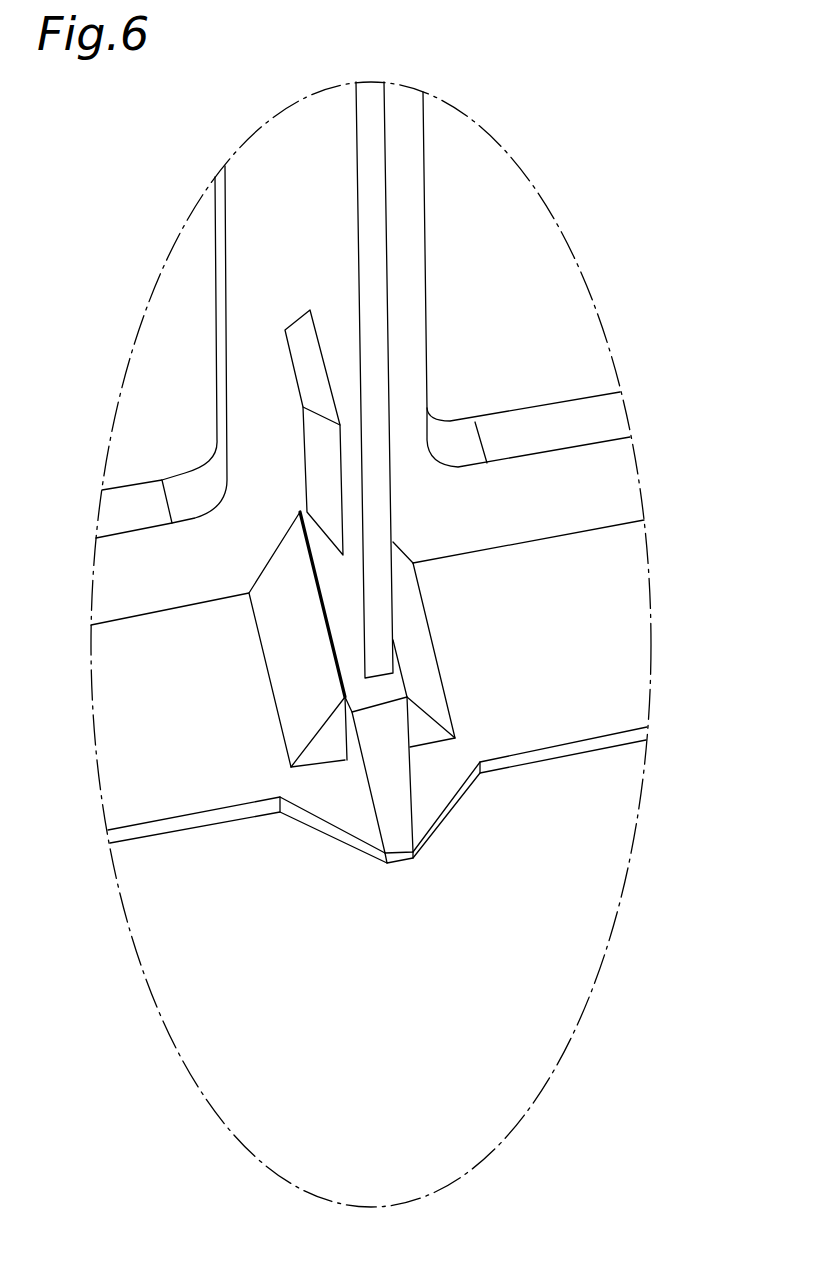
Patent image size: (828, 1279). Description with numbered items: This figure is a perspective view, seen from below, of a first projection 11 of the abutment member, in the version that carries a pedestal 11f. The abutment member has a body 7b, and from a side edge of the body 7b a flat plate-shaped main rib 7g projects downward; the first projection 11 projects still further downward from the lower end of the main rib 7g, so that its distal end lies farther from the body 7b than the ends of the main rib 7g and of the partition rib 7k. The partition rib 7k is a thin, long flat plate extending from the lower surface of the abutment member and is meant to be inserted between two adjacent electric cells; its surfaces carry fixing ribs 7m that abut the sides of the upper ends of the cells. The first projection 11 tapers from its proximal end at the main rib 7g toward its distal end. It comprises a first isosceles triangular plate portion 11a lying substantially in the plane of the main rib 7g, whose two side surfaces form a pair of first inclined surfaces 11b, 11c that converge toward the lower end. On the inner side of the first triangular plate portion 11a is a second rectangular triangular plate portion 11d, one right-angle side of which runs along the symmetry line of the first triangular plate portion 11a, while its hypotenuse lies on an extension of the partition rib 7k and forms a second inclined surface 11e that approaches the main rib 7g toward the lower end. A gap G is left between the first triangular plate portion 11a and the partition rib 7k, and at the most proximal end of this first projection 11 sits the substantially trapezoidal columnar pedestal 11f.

The partition rib 7k is at (325, 185).
The fixing rib 7m is at (293, 413).
The body 7b is at (117, 570).
The main rib 7g is at (120, 785).
The pedestal 11f is at (303, 678).
The first projection 11 is at (465, 807).
The gap G is at (350, 637).
The second inclined surface 11e is at (402, 775).
The second rectangular triangular plate portion 11d is at (363, 795).
The first isosceles triangular plate portion 11a is at (340, 812).
The first inclined surface 11b is at (297, 820).
The first inclined surface 11c is at (443, 818).